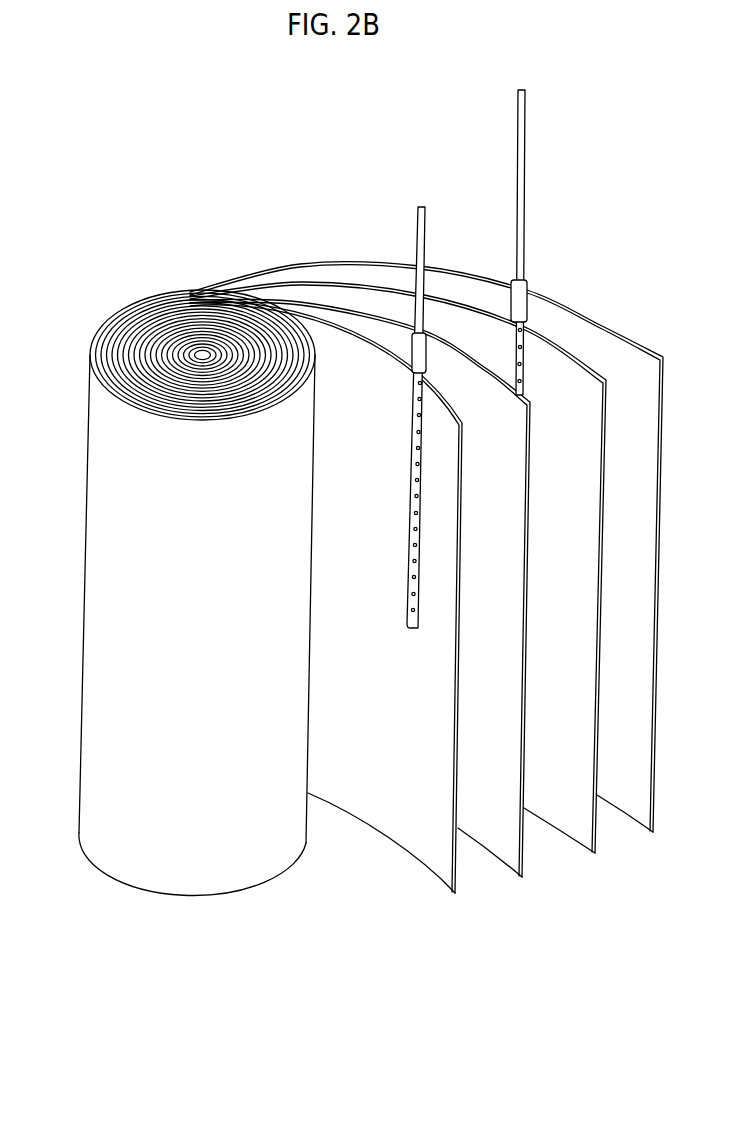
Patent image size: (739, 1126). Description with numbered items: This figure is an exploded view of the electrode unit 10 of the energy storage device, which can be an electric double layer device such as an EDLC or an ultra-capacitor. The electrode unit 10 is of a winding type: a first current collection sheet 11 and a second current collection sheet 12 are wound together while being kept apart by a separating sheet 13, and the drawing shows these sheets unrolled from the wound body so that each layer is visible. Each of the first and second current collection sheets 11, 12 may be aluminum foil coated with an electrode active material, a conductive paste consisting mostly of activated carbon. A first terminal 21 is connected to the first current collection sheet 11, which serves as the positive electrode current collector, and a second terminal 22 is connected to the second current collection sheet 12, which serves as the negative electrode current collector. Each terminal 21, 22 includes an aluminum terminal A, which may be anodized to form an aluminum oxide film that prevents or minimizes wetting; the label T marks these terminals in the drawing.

The electrode unit 10 is at (212, 588).
The first current collection sheet 11 is at (560, 367).
The second current collection sheet 12 is at (335, 348).
The separating sheet 13 is at (633, 803).
The first terminal 21 is at (528, 212).
The second terminal 22 is at (432, 238).
The tab T is at (425, 213).
The aluminum terminal A is at (425, 440).